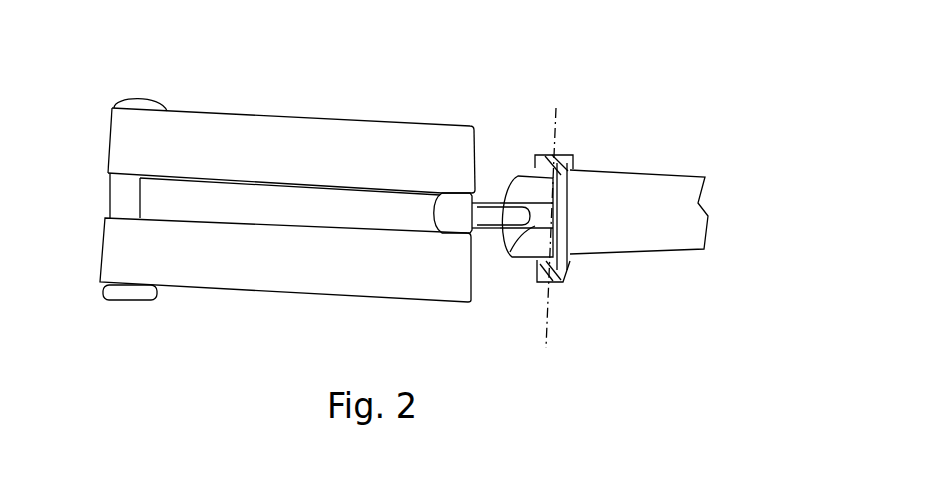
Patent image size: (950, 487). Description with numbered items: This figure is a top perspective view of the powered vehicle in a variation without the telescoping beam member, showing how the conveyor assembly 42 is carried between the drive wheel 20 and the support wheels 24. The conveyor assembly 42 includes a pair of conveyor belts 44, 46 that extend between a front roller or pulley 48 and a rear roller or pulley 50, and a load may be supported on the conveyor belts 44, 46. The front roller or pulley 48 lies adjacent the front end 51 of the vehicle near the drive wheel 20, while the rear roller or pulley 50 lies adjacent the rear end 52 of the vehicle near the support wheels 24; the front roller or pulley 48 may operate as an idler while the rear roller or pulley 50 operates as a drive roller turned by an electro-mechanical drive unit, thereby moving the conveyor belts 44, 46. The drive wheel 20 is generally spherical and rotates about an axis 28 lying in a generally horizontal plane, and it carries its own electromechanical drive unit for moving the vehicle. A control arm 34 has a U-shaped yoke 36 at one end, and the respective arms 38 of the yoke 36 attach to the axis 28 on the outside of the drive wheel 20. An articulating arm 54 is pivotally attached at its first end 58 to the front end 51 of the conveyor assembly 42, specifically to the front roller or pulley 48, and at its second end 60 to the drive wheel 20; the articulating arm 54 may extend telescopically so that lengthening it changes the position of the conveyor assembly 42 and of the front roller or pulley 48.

The drive wheel 20 is at (517, 170).
The support wheels 24 is at (145, 107).
The axis 28 is at (548, 322).
The control arm 34 is at (635, 245).
The yoke 36 is at (542, 260).
The arms 38 is at (571, 156).
The conveyor assembly 42 is at (297, 108).
The conveyor belt 44 is at (237, 133).
The conveyor belt 46 is at (233, 277).
The front roller or pulley 48 is at (487, 190).
The rear roller or pulley 50 is at (115, 193).
The front end 51 is at (480, 143).
The rear end 52 is at (108, 127).
The articulating arm 54 is at (490, 237).
The first end 58 is at (445, 213).
The second end 60 is at (509, 250).